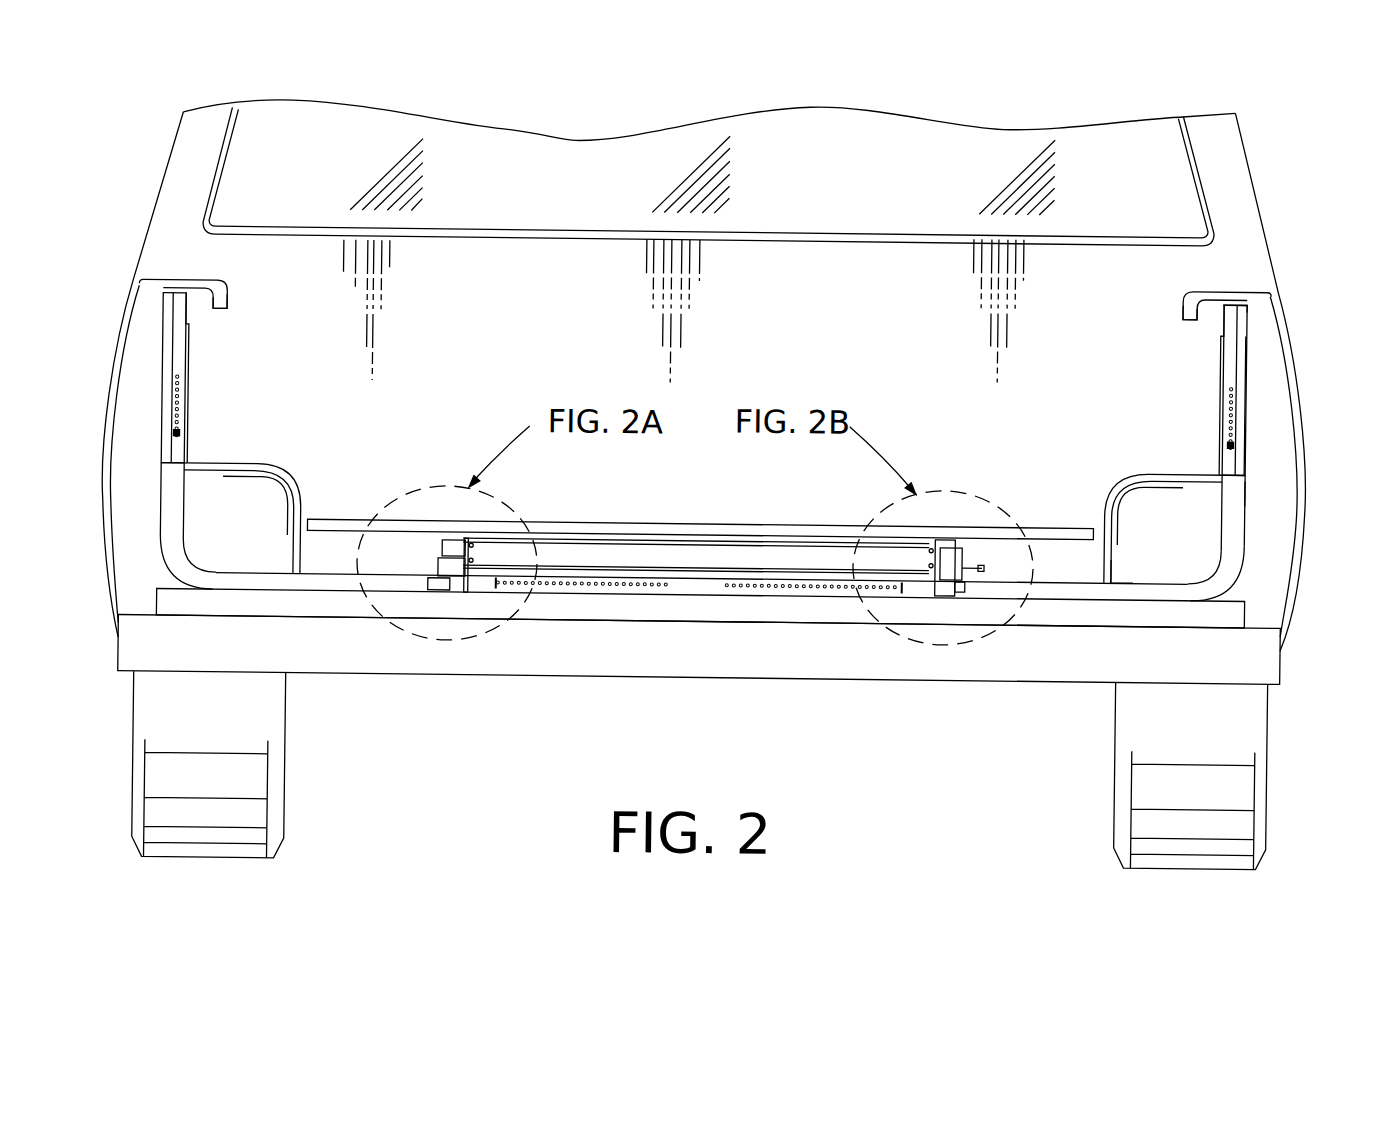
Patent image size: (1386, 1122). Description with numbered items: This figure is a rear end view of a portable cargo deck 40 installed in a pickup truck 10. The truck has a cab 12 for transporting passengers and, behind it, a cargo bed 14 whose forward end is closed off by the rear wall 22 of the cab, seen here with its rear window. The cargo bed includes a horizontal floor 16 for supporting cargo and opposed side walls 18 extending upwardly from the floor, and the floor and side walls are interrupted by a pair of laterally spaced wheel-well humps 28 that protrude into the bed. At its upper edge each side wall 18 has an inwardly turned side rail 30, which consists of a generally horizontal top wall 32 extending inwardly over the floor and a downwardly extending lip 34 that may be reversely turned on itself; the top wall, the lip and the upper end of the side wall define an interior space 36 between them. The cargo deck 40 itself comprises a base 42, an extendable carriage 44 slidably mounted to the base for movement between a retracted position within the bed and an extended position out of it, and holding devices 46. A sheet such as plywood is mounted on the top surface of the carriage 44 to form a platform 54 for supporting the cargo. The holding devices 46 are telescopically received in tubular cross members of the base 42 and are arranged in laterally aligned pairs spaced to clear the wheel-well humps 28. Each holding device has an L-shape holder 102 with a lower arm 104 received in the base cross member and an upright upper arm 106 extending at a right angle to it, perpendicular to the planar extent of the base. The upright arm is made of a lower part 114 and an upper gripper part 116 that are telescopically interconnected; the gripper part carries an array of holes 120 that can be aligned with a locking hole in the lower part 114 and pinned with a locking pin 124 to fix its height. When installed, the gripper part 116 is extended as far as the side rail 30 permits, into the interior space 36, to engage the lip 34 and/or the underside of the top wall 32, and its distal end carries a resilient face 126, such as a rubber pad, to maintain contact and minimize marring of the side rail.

The pickup truck 10 is at (1262, 120).
The cab 12 is at (1237, 177).
The cargo bed 14 is at (1175, 268).
The horizontal floor 16 is at (298, 598).
The side wall 18 is at (1251, 486).
The rear wall 22 is at (771, 359).
The wheel-well hump 28 is at (208, 468).
The side rail 30 is at (242, 285).
The top wall 32 is at (178, 287).
The lip 34 is at (217, 316).
The interior space 36 is at (196, 306).
The portable cargo deck 40 is at (679, 512).
The base 42 is at (700, 590).
The extendable carriage 44 is at (722, 553).
The holding device 46 is at (213, 578).
The platform 54 is at (598, 524).
The L-shape holder 102 is at (1074, 574).
The lower arm 104 is at (1123, 576).
The upright upper arm 106 is at (1241, 461).
The lower part 114 is at (1243, 540).
The gripper part 116 is at (1246, 360).
The holes 120 is at (1252, 403).
The locking pin 124 is at (181, 437).
The resilient face 126 is at (1240, 308).